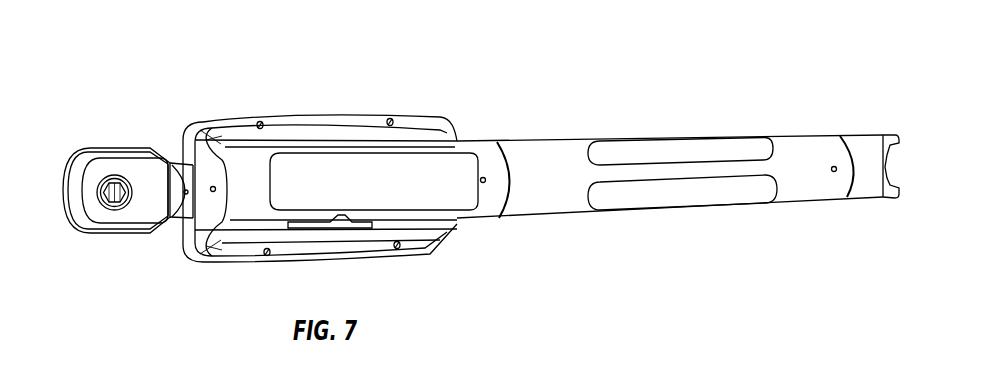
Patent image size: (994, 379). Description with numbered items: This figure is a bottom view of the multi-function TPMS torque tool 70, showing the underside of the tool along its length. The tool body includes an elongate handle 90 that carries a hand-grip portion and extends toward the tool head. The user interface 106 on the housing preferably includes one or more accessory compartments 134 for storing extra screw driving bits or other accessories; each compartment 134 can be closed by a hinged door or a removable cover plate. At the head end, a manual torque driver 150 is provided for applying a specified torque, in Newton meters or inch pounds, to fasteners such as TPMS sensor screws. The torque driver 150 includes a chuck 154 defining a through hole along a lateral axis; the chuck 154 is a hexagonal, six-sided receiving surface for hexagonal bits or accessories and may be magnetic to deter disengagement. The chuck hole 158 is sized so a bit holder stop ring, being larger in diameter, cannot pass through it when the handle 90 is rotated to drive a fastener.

The torque tool 70 is at (591, 249).
The handle 90 is at (693, 212).
The user interface 106 is at (329, 99).
The accessory compartment 134 is at (297, 113).
The torque driver 150 is at (97, 139).
The chuck 154 is at (119, 177).
The chuck hole 158 is at (106, 211).